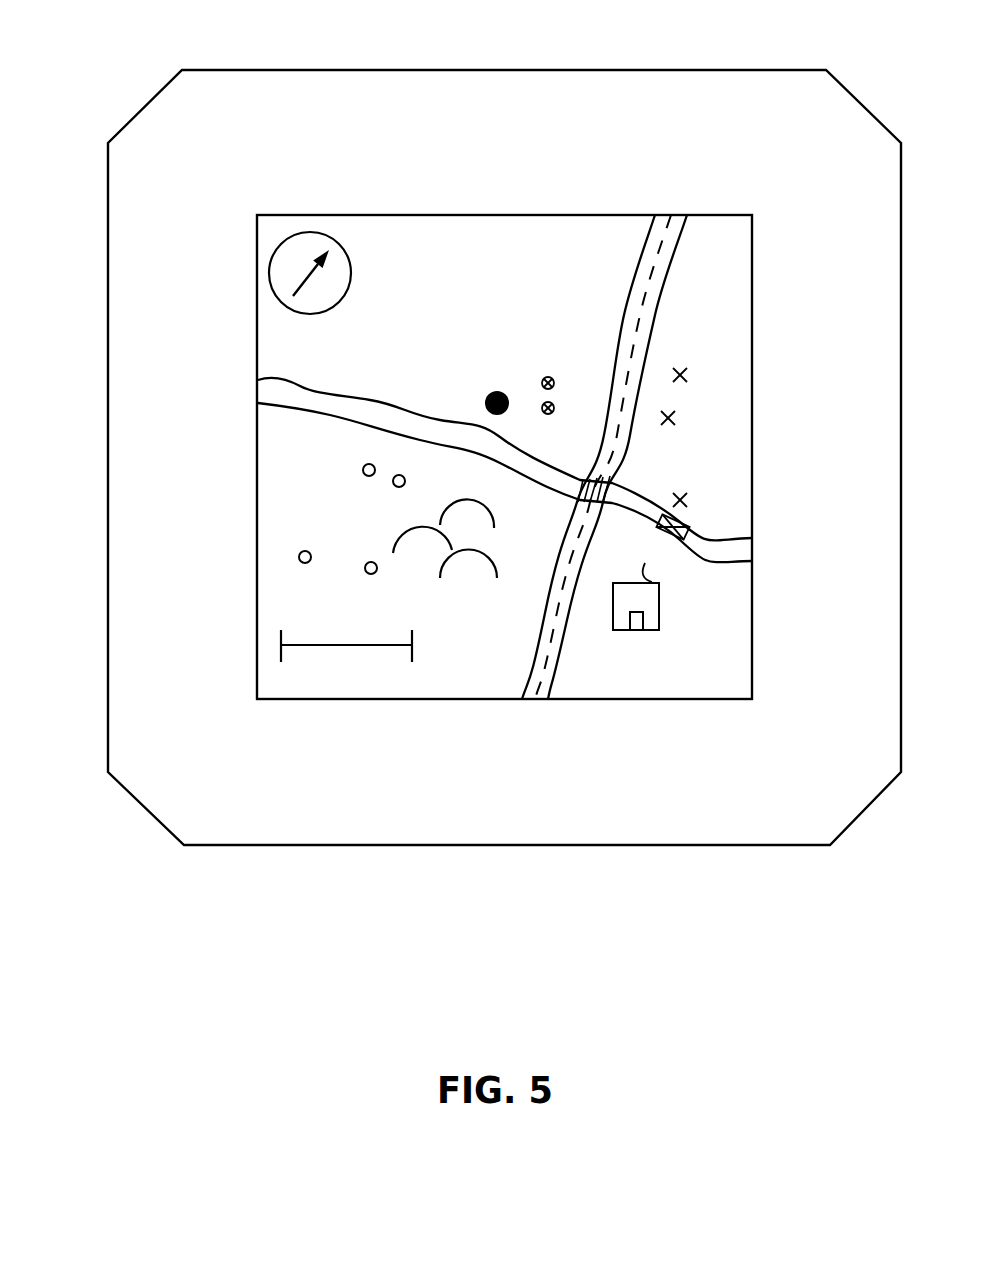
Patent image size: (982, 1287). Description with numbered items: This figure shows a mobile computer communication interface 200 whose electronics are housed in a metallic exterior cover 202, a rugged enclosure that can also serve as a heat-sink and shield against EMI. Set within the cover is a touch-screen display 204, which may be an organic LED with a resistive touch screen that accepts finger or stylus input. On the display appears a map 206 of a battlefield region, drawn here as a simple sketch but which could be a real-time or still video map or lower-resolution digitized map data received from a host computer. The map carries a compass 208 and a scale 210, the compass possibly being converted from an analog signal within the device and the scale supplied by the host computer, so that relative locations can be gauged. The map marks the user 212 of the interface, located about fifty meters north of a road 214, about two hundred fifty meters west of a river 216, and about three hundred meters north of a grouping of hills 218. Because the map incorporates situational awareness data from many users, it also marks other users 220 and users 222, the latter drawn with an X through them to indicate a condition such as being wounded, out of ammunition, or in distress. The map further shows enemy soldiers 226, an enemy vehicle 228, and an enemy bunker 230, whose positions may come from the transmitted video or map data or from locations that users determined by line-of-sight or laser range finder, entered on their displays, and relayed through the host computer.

The mobile computer communication interface 200 is at (111, 33).
The metallic exterior cover 202 is at (789, 148).
The touch-screen display 204 is at (383, 215).
The map 206 is at (477, 265).
The compass 208 is at (351, 283).
The scale 210 is at (443, 657).
The user 212 is at (489, 393).
The road 214 is at (303, 383).
The river 216 is at (637, 263).
The grouping of hills 218 is at (418, 596).
The other users 220 is at (365, 464).
The users 222 is at (551, 378).
The enemy soldiers 226 is at (688, 377).
The enemy vehicle 228 is at (668, 538).
The enemy bunker 230 is at (659, 603).